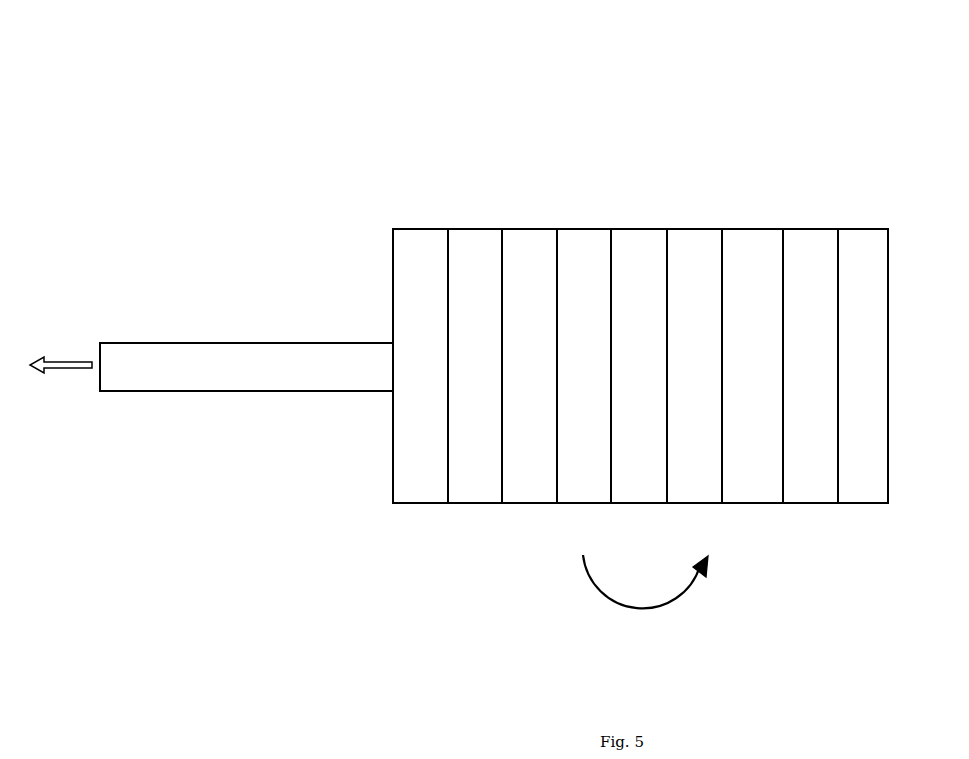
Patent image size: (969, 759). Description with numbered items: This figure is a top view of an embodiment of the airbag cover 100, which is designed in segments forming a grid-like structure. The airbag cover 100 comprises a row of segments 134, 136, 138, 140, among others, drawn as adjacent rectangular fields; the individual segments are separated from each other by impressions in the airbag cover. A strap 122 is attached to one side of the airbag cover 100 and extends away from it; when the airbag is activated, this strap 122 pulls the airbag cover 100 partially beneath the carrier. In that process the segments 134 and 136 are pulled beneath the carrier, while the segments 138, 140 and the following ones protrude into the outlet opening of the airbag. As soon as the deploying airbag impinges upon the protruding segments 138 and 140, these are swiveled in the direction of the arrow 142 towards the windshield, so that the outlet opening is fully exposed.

The airbag cover 100 is at (716, 68).
The strap 122 is at (173, 340).
The segment 134 is at (467, 228).
The segment 136 is at (580, 228).
The segment 138 is at (687, 228).
The segment 140 is at (807, 230).
The arrow 142 is at (640, 602).